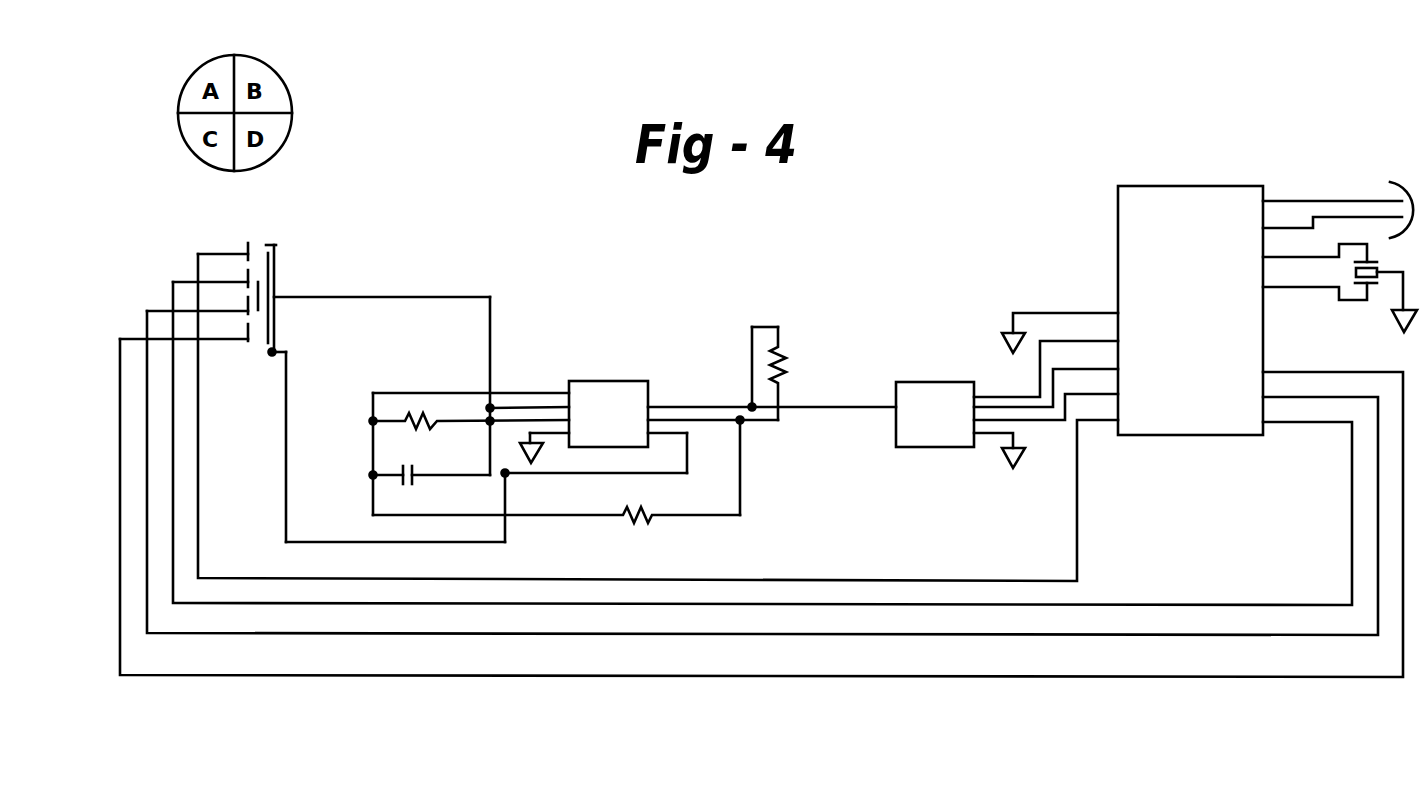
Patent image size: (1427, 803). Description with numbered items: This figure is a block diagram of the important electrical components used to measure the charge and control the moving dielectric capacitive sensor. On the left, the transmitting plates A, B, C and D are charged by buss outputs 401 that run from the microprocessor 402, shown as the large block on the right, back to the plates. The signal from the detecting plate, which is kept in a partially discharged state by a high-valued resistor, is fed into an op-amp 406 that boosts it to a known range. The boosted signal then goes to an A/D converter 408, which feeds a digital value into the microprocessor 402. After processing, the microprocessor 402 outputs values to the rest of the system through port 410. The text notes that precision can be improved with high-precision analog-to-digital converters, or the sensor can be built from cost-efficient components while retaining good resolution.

The buss outputs 401 is at (873, 568).
The microprocessor 402 is at (1160, 206).
The op-amp 406 is at (605, 402).
The A/D converter 408 is at (927, 388).
The port 410 is at (1344, 193).